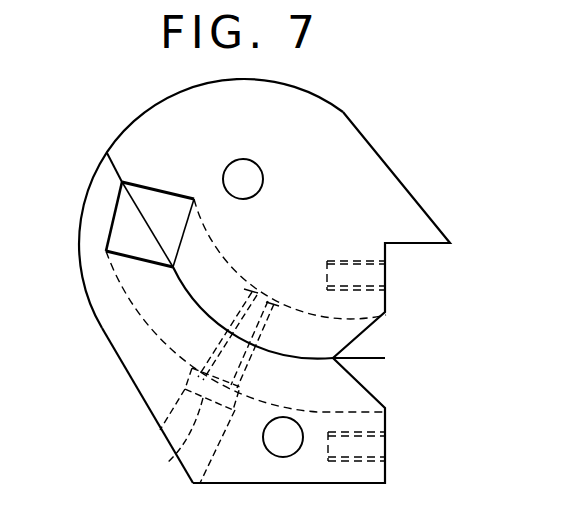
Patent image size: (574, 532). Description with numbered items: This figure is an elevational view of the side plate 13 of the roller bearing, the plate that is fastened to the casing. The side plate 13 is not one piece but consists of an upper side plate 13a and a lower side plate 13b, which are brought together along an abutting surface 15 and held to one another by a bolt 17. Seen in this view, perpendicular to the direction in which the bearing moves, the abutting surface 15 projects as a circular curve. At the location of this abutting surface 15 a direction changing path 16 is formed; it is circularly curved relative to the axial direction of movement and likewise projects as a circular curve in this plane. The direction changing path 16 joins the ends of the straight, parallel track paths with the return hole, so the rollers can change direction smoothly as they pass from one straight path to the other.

The side plate 13 is at (394, 206).
The upper side plate 13a is at (337, 128).
The lower side plate 13b is at (133, 362).
The abutting surface 15 is at (185, 289).
The direction changing path 16 is at (316, 398).
The bolt 17 is at (170, 453).